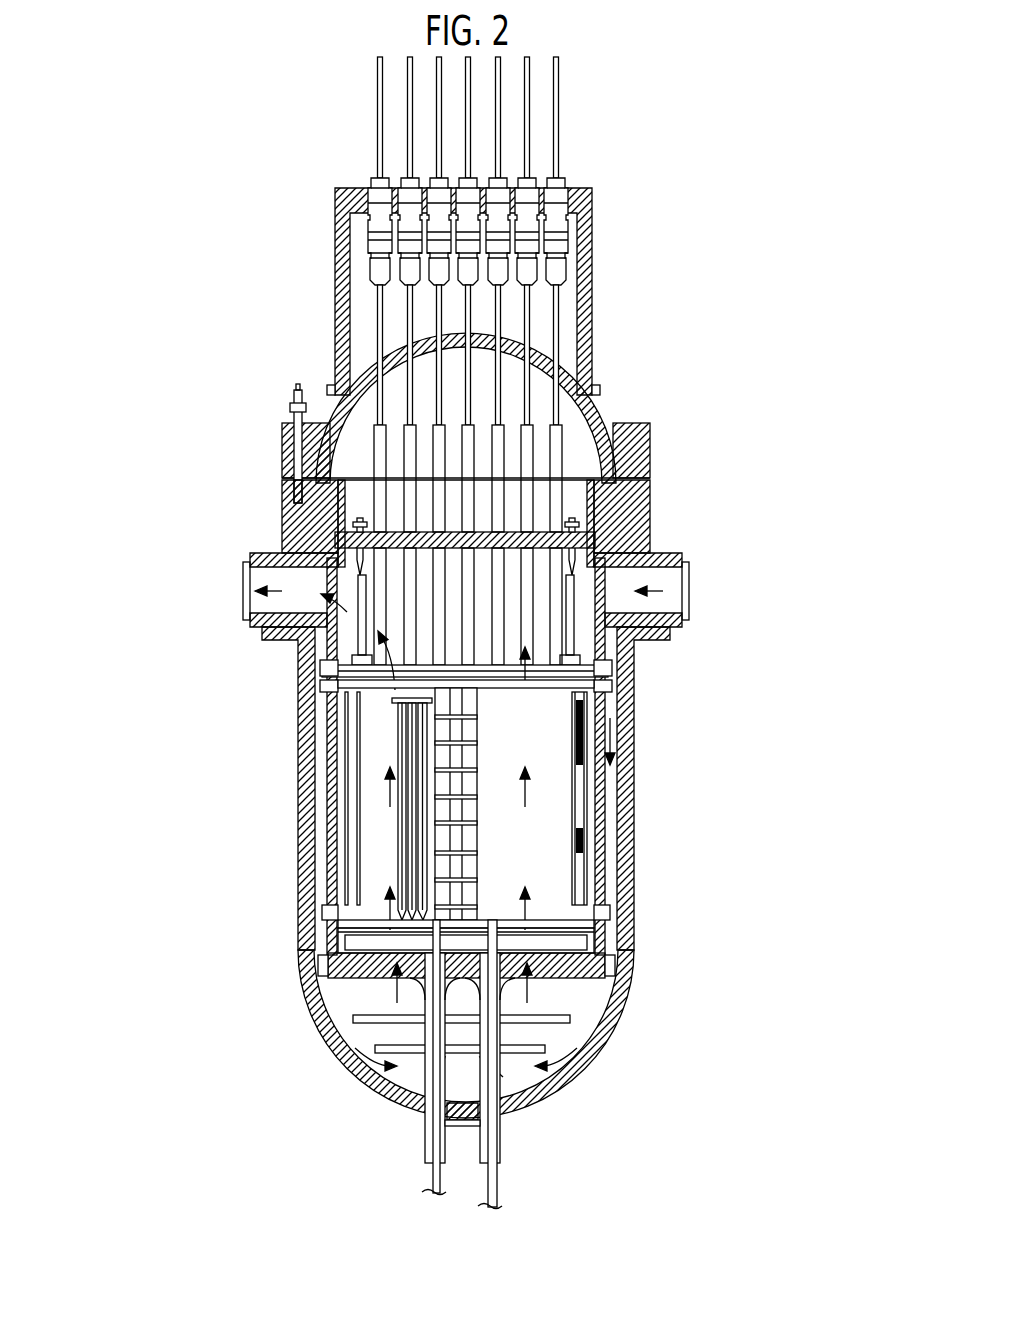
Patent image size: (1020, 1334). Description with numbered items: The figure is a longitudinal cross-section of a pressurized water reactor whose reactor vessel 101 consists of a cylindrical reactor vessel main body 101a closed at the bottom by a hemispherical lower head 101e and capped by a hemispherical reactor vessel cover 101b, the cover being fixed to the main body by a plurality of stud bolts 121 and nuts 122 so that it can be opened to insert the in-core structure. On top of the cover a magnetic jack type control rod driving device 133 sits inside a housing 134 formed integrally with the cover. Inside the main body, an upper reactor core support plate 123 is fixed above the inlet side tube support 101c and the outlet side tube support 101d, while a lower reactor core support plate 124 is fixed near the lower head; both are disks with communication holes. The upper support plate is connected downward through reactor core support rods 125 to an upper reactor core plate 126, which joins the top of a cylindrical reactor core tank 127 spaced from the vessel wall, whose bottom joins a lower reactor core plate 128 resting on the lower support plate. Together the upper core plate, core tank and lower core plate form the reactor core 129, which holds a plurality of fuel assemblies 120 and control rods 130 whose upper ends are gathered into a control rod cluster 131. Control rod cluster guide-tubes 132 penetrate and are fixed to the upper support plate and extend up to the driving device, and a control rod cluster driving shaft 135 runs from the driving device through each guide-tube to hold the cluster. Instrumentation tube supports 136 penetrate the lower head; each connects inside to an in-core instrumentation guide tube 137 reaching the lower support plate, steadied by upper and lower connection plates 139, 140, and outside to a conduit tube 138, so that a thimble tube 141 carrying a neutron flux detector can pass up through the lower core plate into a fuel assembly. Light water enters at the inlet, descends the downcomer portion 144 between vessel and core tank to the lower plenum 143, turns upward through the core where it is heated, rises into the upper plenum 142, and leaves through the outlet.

The reactor vessel 101 is at (656, 496).
The reactor vessel main body 101a is at (632, 745).
The reactor vessel cover 101b is at (588, 382).
The inlet side tube support 101c is at (690, 600).
The outlet side tube support 101d is at (250, 600).
The lower head 101e is at (565, 1110).
The fuel assembly 120 is at (596, 690).
The stud bolt 121 is at (300, 445).
The nut 122 is at (292, 405).
The upper reactor core support plate 123 is at (540, 540).
The lower reactor core support plate 124 is at (330, 995).
The reactor core support rod 125 is at (340, 548).
The upper reactor core plate 126 is at (608, 671).
The reactor core tank 127 is at (602, 796).
The lower reactor core plate 128 is at (335, 925).
The reactor core 129 is at (545, 850).
The control rod 130 is at (400, 740).
The control rod cluster 131 is at (358, 700).
The control rod cluster guide-tube 132 is at (409, 465).
The control rod driving device 133 is at (600, 204).
The housing 134 is at (348, 240).
The control rod cluster driving shaft 135 is at (410, 300).
The instrumentation tube support 136 is at (428, 1122).
The in-core instrumentation guide tube 137 is at (545, 1048).
The conduit tube 138 is at (432, 1180).
The upper connection plate 139 is at (570, 1020).
The lower connection plate 140 is at (590, 1070).
The thimble tube 141 is at (498, 1200).
The upper plenum 142 is at (330, 590).
The lower plenum 143 is at (482, 1112).
The downcomer portion 144 is at (600, 905).